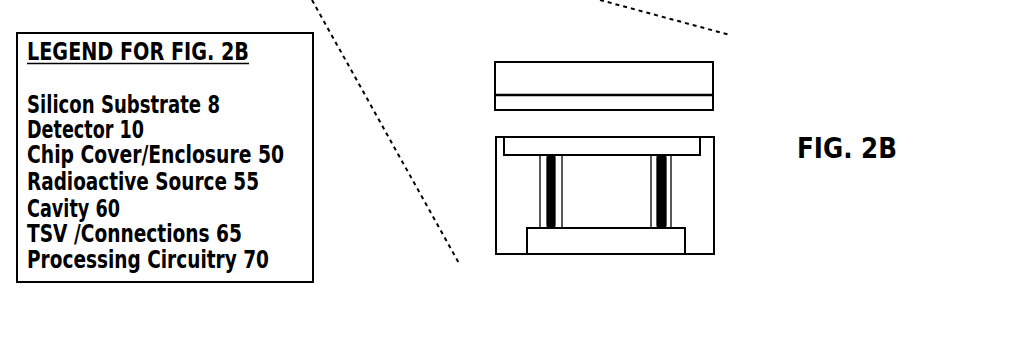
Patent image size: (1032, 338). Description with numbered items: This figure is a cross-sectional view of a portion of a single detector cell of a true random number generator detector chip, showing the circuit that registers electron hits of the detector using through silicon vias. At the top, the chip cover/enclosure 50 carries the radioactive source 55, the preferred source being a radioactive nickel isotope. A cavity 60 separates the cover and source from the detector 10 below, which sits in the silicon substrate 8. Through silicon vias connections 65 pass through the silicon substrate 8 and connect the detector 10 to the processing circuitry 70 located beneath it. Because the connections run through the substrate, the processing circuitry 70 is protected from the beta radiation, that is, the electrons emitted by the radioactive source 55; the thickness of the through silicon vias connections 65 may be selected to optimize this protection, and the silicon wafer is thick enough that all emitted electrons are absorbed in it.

The silicon substrate 8 is at (718, 120).
The detector 10 is at (520, 150).
The chip cover/enclosure 50 is at (496, 70).
The radioactive source 55 is at (496, 107).
The cavity 60 is at (502, 125).
The through silicon vias connections 65 is at (672, 191).
The processing circuitry 70 is at (668, 254).